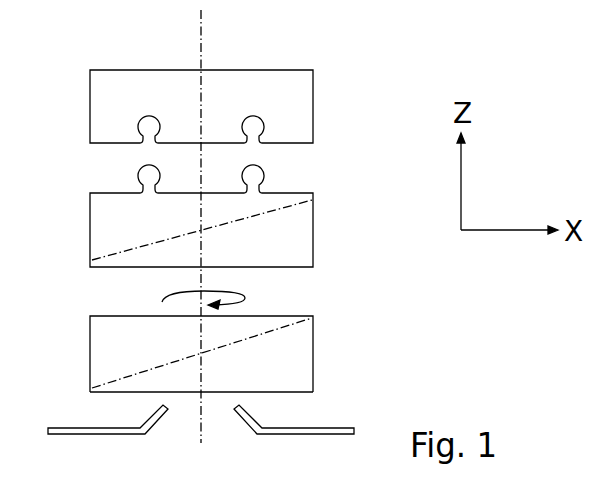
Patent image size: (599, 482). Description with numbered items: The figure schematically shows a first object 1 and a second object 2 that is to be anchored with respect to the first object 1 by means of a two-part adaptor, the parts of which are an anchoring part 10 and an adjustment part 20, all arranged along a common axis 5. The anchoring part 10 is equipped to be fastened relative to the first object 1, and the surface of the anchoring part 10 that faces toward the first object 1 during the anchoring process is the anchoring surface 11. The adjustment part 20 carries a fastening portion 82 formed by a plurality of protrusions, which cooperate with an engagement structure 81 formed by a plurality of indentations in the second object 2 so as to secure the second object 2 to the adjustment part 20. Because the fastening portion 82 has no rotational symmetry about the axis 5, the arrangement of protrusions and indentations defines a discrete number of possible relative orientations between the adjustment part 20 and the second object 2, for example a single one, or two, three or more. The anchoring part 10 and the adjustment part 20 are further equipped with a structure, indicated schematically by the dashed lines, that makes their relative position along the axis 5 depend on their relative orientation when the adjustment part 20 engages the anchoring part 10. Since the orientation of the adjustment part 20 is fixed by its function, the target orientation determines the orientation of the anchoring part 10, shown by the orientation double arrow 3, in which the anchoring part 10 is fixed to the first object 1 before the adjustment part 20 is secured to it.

The first object 1 is at (62, 428).
The second object 2 is at (296, 108).
The orientation double arrow 3 is at (182, 288).
The axis 5 is at (201, 70).
The anchoring part 10 is at (300, 345).
The anchoring surface 11 is at (283, 393).
The adjustment part 20 is at (296, 237).
The engagement structure 81 is at (148, 127).
The fastening portion 82 is at (147, 175).